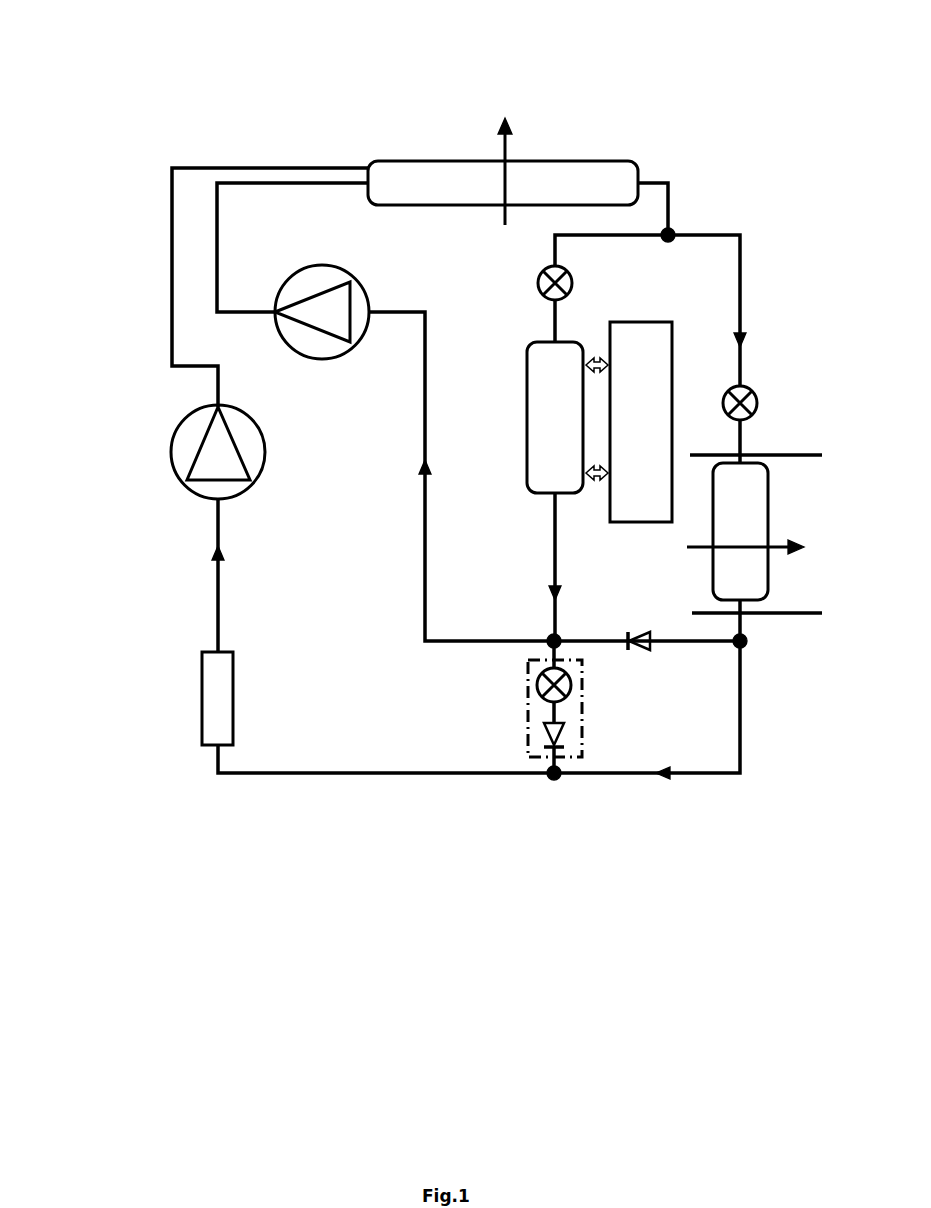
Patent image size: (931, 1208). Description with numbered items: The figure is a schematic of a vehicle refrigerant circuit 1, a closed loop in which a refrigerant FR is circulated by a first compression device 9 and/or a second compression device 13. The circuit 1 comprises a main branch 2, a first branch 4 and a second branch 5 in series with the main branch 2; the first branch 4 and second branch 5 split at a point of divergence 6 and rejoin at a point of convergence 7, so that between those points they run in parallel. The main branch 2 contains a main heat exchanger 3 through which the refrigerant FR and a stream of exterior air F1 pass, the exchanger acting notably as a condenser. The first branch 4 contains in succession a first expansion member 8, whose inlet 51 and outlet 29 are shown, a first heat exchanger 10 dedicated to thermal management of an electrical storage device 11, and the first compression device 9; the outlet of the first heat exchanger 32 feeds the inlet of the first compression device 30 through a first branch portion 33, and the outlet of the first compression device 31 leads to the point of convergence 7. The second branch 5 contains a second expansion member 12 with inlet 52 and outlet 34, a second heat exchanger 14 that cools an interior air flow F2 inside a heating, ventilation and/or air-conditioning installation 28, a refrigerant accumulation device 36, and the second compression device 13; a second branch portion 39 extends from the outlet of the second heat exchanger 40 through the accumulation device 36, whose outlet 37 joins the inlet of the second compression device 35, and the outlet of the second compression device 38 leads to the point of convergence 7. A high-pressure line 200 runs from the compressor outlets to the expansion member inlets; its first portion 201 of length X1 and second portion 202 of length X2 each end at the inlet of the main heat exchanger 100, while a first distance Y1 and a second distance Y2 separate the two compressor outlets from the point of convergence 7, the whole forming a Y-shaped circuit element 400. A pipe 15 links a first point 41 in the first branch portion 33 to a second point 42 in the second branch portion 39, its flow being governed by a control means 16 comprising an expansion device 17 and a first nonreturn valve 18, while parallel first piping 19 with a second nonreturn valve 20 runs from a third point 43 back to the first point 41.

The circuit 1 is at (755, 136).
The main branch 2 is at (650, 157).
The main heat exchanger 3 is at (503, 183).
The first branch 4 is at (541, 549).
The second branch 5 is at (756, 302).
The point of divergence 6 is at (674, 230).
The point of convergence 7 is at (347, 178).
The first expansion member 8 is at (568, 274).
The first compression device 9 is at (345, 272).
The first heat exchanger 10 is at (555, 417).
The electrical storage device 11 is at (629, 422).
The second expansion member 12 is at (753, 395).
The second compression device 13 is at (172, 462).
The second heat exchanger 14 is at (740, 531).
The pipe 15 is at (512, 697).
The control means 16 is at (585, 673).
The expansion device 17 is at (575, 708).
The first nonreturn valve 18 is at (570, 733).
The first piping 19 is at (604, 630).
The second nonreturn valve 20 is at (652, 647).
The heating, ventilation and/or air-conditioning installation 28 is at (792, 455).
The outlet of the first expansion member 29 is at (560, 306).
The inlet of the first compression device 30 is at (375, 320).
The outlet of the first compression device 31 is at (268, 310).
The outlet of the first heat exchanger 32 is at (562, 495).
The first branch portion 33 is at (480, 632).
The outlet of the second expansion member 34 is at (733, 427).
The inlet of the second compression device 35 is at (222, 500).
The refrigerant accumulation device 36 is at (233, 722).
The outlet of the accumulation device 37 is at (218, 650).
The outlet of the second compression device 38 is at (220, 407).
The second branch portion 39 is at (498, 781).
The outlet of the second heat exchanger 40 is at (742, 602).
The first point 41 is at (545, 646).
The second point 42 is at (557, 778).
The third point 43 is at (745, 645).
The inlet of the first expansion member 51 is at (548, 268).
The inlet of the second expansion member 52 is at (722, 382).
The inlet of the main heat exchanger 100 is at (372, 183).
The high-pressure line 200 is at (150, 139).
The first portion 201 is at (235, 310).
The second portion 202 is at (172, 307).
The circuit element 400 is at (275, 139).
The first length X1 is at (362, 182).
The second length X2 is at (353, 127).
The first distance Y1 is at (252, 310).
The second distance Y2 is at (172, 345).
The stream of exterior air F1 is at (519, 171).
The interior air flow F2 is at (759, 548).
The refrigerant FR is at (693, 775).